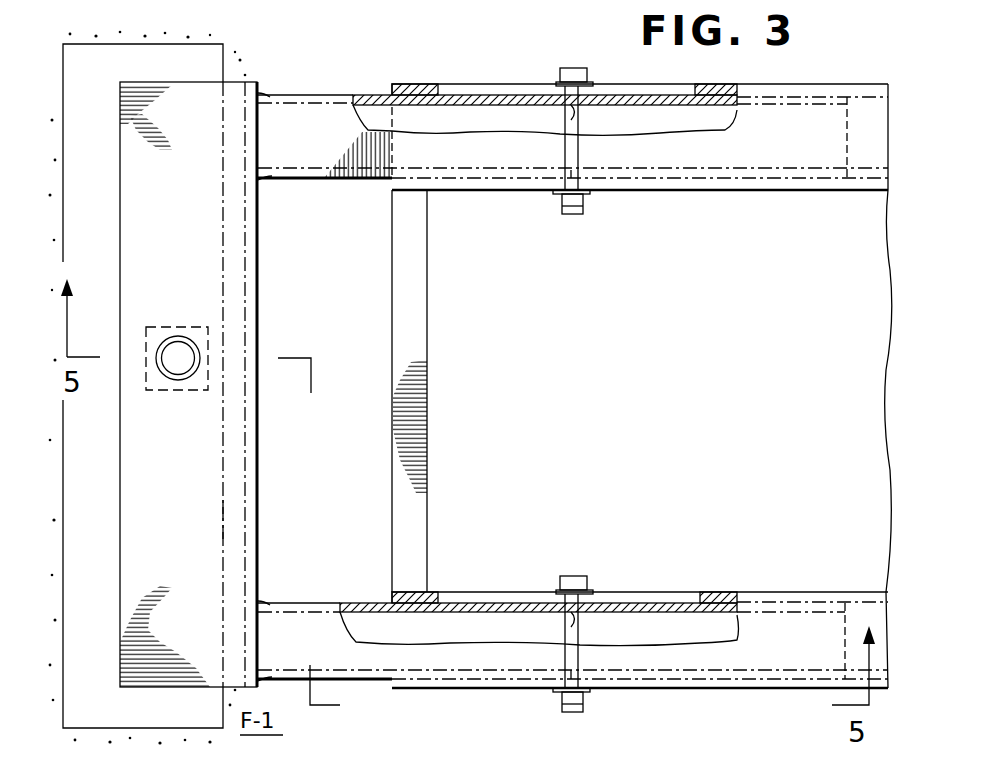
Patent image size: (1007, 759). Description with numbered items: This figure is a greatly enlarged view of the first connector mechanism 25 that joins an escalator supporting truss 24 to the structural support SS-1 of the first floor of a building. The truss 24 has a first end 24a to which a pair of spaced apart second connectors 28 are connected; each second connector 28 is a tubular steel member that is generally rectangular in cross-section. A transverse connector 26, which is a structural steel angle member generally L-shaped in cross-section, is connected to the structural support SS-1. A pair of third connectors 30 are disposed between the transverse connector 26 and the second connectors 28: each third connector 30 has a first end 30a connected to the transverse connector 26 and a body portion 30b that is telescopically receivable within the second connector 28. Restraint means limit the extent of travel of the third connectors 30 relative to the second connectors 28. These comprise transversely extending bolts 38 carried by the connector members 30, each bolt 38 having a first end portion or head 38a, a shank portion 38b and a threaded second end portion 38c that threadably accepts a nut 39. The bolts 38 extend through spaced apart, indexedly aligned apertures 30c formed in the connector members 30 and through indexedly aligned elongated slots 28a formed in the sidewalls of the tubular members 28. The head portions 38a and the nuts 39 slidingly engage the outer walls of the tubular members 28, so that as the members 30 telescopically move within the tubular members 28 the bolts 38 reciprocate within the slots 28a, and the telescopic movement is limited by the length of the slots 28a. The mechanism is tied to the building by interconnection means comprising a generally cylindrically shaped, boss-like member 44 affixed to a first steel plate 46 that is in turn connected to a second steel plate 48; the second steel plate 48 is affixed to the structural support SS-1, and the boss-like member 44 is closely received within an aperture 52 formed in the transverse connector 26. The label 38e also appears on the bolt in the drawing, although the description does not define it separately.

The structural support SS-1 is at (173, 34).
The first connector mechanism 25 is at (340, 78).
The transverse connector 26 is at (188, 384).
The first steel plate 46 is at (176, 322).
The boss-like member 44 is at (178, 356).
The aperture 52 is at (186, 372).
The second steel plate 48 is at (196, 521).
The supporting truss 24 is at (442, 458).
The first end of truss 24a is at (415, 360).
The third connector 30 is at (358, 192).
The first end of third connector 30a is at (283, 140).
The body portion of third connector 30b is at (700, 118).
The aperture 30c is at (572, 102).
The second connector 28 is at (416, 90).
The elongated slot 28a is at (445, 90).
The bolt 38 is at (548, 151).
The first end portion of bolt 38a is at (571, 66).
The shank portion of bolt 38b is at (578, 128).
The threaded second end portion of bolt 38c is at (572, 676).
The bolt thread portion 38e is at (567, 174).
The nut 39 is at (575, 215).